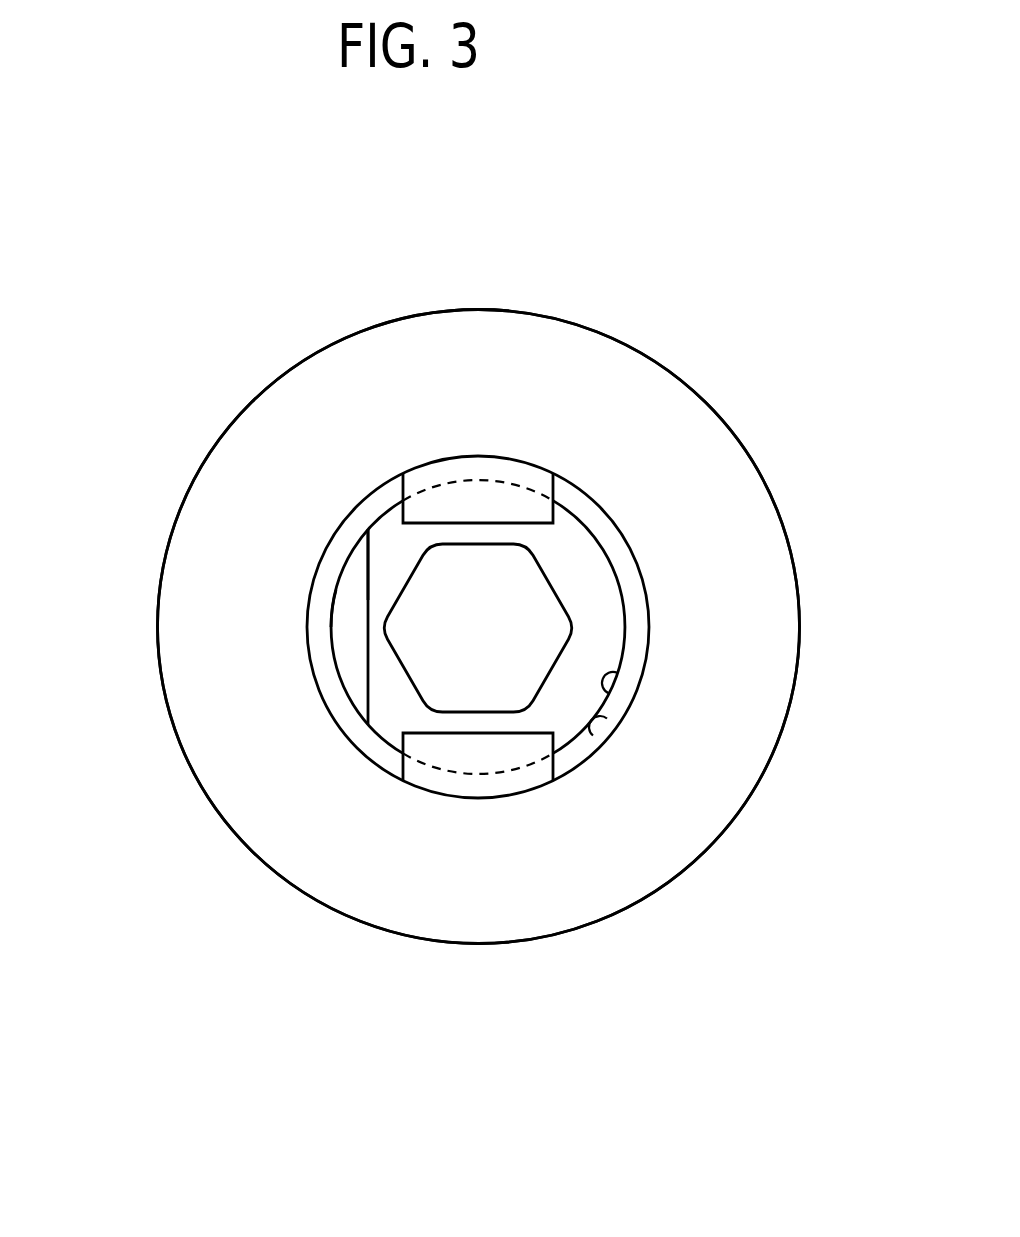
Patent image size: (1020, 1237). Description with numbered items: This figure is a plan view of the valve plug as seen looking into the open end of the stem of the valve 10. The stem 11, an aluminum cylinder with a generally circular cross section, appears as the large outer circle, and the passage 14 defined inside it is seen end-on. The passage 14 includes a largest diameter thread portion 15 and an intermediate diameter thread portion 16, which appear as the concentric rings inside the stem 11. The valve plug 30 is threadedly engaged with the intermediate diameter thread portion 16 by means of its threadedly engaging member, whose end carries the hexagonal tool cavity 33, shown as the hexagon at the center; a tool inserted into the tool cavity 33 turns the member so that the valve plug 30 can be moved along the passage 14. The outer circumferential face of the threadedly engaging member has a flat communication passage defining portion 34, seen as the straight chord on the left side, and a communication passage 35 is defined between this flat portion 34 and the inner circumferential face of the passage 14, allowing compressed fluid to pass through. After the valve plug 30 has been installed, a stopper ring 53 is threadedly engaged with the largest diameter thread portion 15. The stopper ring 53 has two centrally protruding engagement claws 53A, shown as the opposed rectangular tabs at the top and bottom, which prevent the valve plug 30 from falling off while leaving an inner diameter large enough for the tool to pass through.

The valve 10 is at (748, 303).
The stem 11 is at (713, 408).
The passage 14 is at (390, 540).
The largest diameter thread portion 15 is at (610, 723).
The intermediate diameter thread portion 16 is at (605, 680).
The valve plug 30 is at (602, 625).
The hexagonal tool cavity 33 is at (540, 612).
The communication passage defining portion 34 is at (367, 560).
The communication passage 35 is at (347, 622).
The stopper ring 53 is at (430, 717).
The engagement claws 53A is at (457, 507).